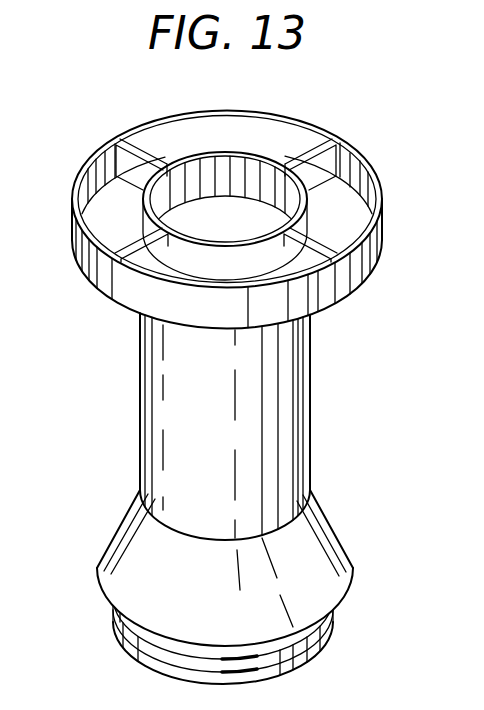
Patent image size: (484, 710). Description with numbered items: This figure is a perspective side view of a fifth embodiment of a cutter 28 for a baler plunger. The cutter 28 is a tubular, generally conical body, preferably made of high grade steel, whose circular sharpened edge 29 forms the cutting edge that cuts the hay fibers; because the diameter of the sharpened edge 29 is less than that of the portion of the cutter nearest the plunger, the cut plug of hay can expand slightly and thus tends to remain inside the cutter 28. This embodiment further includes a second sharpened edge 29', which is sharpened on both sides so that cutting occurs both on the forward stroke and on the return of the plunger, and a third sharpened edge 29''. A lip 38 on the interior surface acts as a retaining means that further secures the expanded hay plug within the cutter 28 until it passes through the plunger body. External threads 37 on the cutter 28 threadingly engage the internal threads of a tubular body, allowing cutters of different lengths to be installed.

The cutter 28 is at (324, 368).
The sharpened edge 29 is at (331, 146).
The second sharpened edge 29' is at (352, 194).
The third sharpened edge 29'' is at (105, 286).
The external threads 37 is at (330, 618).
The lip 38 is at (231, 199).